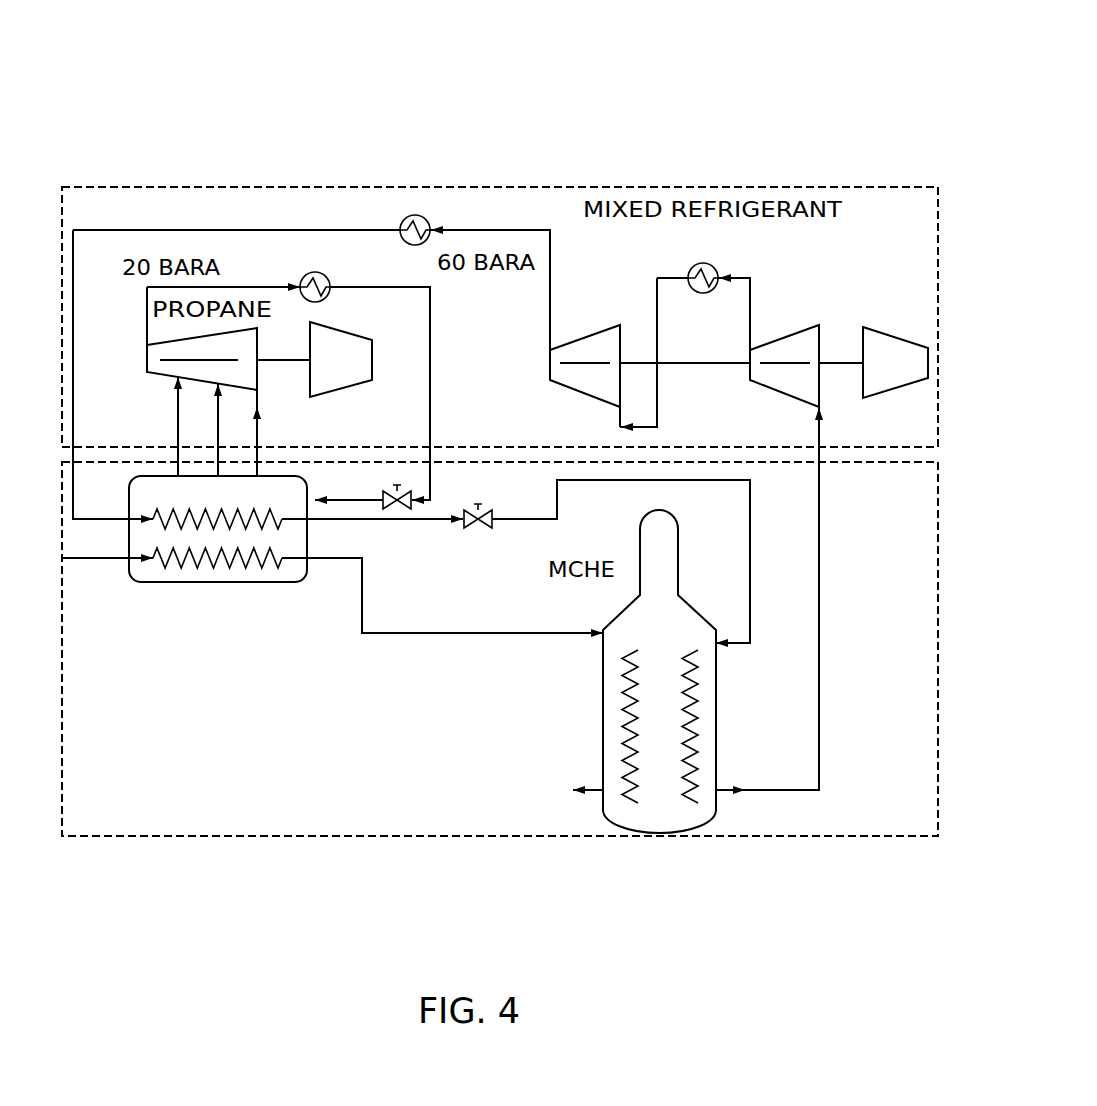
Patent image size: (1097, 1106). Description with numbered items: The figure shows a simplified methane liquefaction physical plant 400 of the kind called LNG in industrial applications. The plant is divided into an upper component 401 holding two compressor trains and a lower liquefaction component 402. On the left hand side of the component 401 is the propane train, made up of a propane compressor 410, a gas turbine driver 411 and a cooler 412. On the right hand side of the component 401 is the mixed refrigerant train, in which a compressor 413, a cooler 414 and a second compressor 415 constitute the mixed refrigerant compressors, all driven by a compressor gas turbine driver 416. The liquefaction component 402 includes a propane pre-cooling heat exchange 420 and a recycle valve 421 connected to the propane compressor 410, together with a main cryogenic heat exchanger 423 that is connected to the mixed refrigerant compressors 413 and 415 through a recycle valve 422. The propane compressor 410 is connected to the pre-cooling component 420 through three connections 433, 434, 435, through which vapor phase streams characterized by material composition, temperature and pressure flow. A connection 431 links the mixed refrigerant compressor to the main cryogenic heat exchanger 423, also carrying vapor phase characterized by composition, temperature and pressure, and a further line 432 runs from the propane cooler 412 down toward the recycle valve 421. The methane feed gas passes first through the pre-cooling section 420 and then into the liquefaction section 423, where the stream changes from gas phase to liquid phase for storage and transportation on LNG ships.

The methane liquefaction physical plant 400 is at (500, 460).
The compressor train component 401 is at (498, 187).
The liquefaction component 402 is at (498, 836).
The propane compressor 410 is at (257, 373).
The gas turbine driver 411 is at (372, 358).
The cooler 412 is at (312, 272).
The compressor 413 is at (583, 336).
The cooler 414 is at (700, 263).
The compressor 415 is at (783, 335).
The compressor gas turbine driver 416 is at (897, 338).
The propane pre-cooling heat exchange 420 is at (222, 582).
The recycle valve 421 is at (403, 512).
The recycle valve 422 is at (485, 530).
The main cryogenic heat exchanger 423 is at (603, 718).
The connection 431 is at (819, 452).
The propane line from aftercooler to expansion valve 432 is at (431, 455).
The connection 433 is at (257, 455).
The connection 434 is at (217, 428).
The connection 435 is at (178, 425).